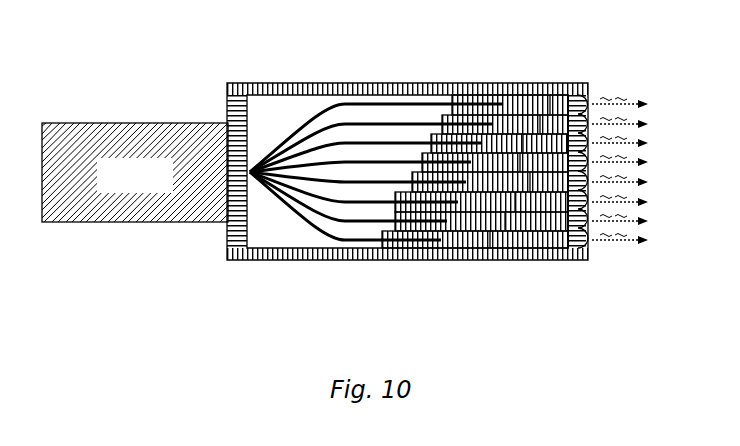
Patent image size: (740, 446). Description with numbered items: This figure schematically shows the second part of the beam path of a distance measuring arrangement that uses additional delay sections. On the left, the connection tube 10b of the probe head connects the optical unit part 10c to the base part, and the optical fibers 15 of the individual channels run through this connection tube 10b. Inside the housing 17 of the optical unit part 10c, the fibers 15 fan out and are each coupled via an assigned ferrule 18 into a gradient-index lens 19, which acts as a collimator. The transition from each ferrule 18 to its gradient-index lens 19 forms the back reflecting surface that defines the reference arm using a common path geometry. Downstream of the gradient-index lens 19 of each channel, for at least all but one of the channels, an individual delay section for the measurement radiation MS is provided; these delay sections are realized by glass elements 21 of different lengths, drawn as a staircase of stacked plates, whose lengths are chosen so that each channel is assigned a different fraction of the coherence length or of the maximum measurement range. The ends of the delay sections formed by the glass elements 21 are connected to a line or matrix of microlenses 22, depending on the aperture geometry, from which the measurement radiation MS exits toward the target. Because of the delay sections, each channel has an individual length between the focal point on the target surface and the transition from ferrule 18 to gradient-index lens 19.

The connection tube 10b is at (118, 184).
The optical unit part 10c is at (168, 289).
The optical fibers 15 is at (316, 152).
The housing 17 is at (407, 145).
The ferrules 18 is at (451, 198).
The gradient-index lenses 19 is at (484, 138).
The glass elements 21 is at (504, 198).
The microlenses 22 is at (553, 198).
The measurement radiation MS is at (620, 158).